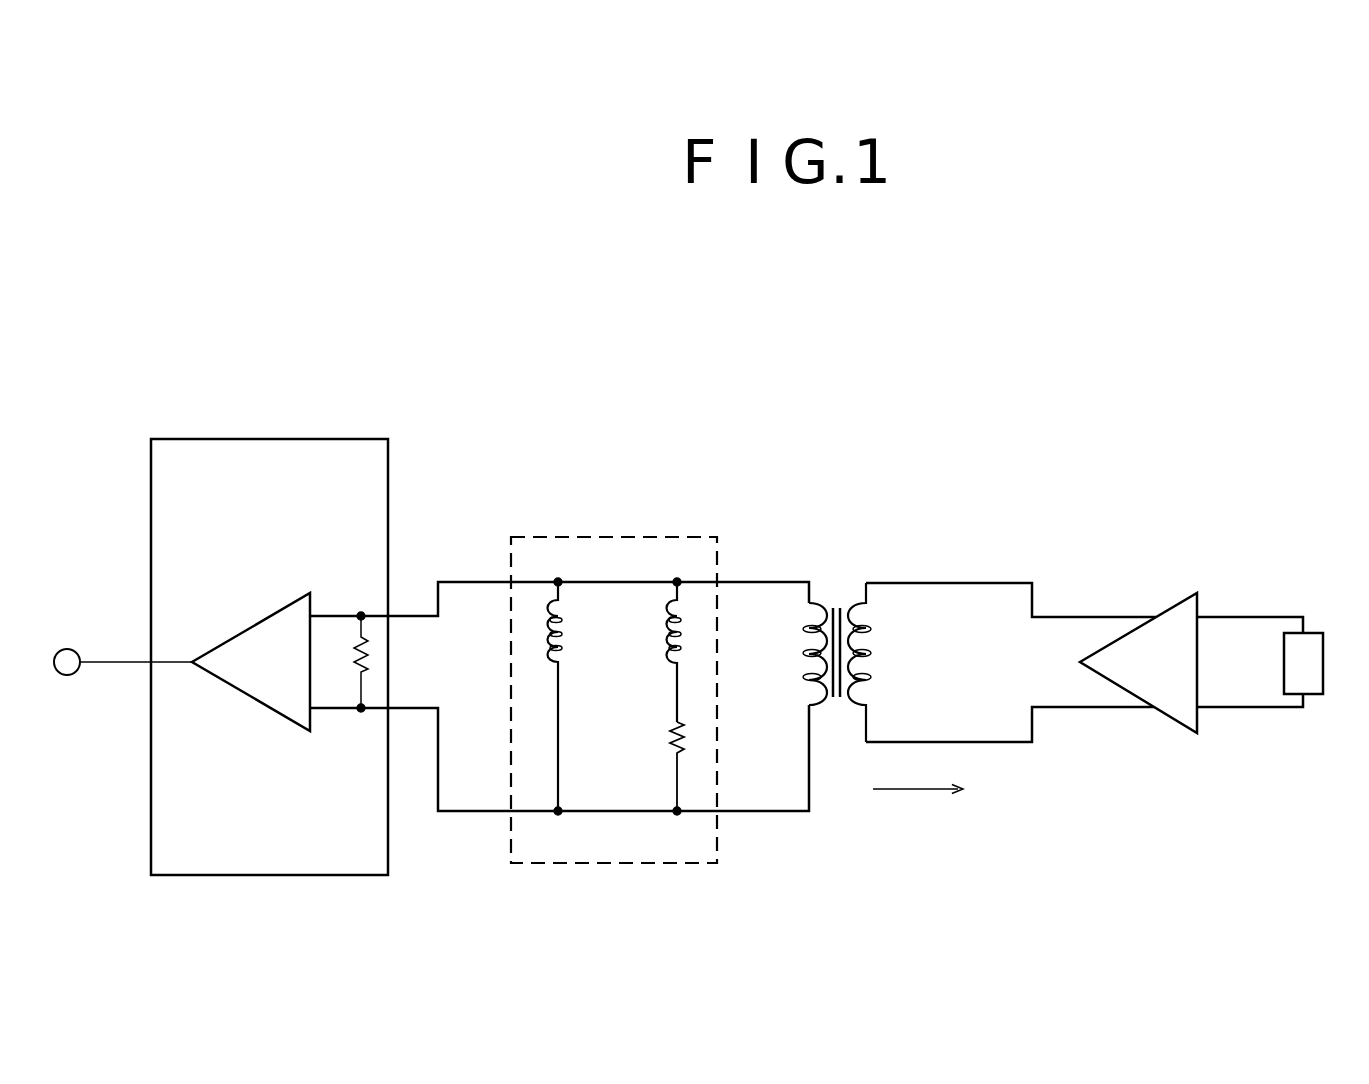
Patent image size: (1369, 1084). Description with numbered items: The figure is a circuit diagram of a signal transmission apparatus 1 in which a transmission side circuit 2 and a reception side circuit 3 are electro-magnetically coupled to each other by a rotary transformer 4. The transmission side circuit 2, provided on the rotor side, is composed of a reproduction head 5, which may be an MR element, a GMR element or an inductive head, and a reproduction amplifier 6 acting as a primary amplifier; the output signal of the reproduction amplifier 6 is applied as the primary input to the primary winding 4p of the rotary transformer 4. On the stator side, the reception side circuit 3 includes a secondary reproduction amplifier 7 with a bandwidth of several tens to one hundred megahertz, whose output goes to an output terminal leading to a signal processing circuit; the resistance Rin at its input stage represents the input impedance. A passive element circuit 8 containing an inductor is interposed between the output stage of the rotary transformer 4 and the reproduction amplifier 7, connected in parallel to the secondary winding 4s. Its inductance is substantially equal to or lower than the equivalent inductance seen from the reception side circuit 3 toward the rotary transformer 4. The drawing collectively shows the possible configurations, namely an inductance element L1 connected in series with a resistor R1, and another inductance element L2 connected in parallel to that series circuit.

The signal transmission apparatus 1 is at (467, 308).
The transmission side circuit 2 is at (1198, 530).
The reception side circuit 3 is at (202, 388).
The rotary transformer 4 is at (837, 578).
The secondary winding 4s is at (794, 654).
The primary winding 4p is at (883, 662).
The reproduction head 5 is at (1313, 633).
The reproduction amplifier 6 is at (1167, 713).
The reproduction amplifier 7 is at (297, 438).
The passive element circuit 8 is at (609, 537).
The resistance Rin is at (343, 644).
The inductance element L1 is at (653, 650).
The inductance element L2 is at (575, 696).
The resistor R1 is at (654, 768).